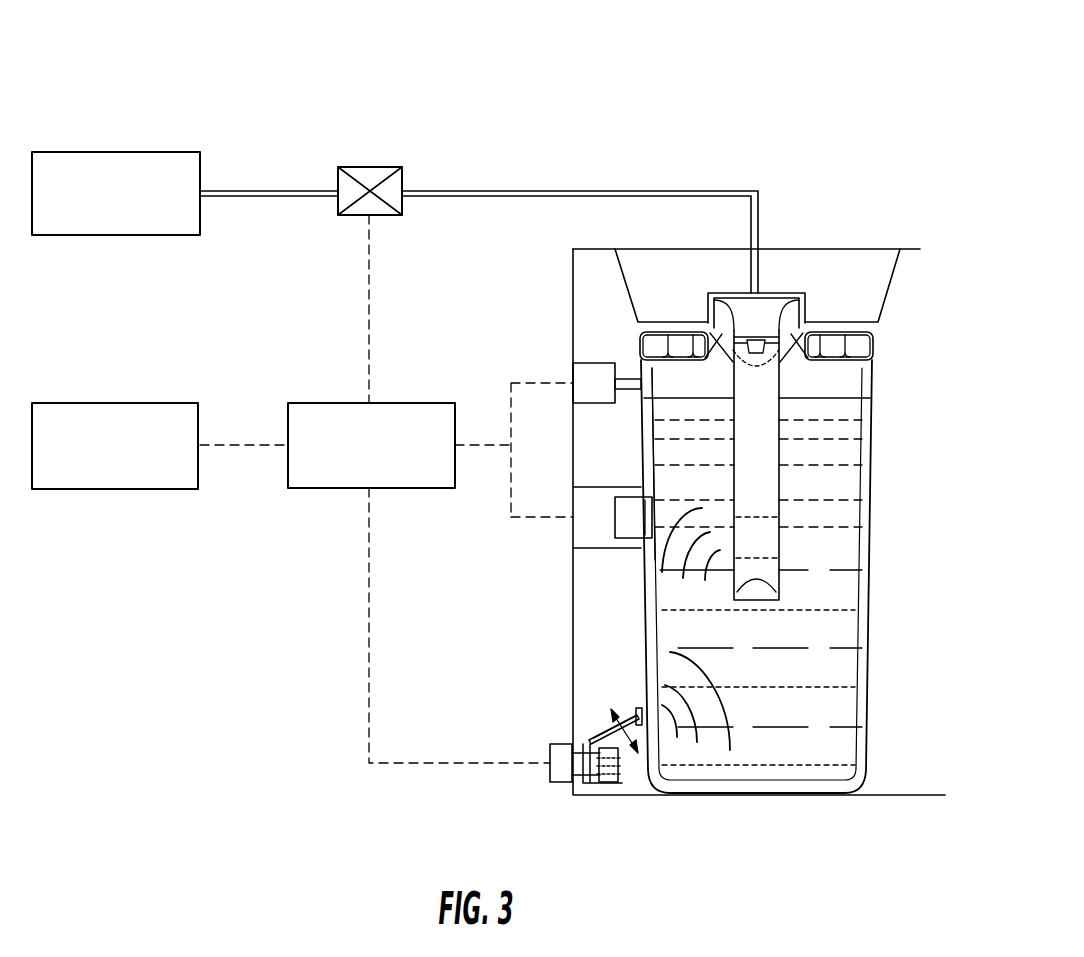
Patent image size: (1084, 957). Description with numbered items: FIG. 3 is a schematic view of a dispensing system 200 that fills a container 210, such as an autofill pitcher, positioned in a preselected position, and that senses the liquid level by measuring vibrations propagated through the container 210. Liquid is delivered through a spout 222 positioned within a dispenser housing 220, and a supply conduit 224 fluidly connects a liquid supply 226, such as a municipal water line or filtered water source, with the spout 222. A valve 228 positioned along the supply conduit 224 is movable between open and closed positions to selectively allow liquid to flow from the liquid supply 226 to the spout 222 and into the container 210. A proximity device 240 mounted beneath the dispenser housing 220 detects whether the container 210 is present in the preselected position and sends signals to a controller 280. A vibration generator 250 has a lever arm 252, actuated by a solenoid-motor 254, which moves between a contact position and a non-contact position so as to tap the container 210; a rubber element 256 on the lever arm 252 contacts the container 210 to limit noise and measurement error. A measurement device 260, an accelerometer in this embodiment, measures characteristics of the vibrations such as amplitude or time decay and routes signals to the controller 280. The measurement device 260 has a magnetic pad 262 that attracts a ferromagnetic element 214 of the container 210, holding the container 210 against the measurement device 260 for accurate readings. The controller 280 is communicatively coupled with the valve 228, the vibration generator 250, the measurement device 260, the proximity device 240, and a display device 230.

The dispensing system 200 is at (329, 48).
The container 210 is at (872, 558).
The ferromagnetic element 214 is at (648, 545).
The dispenser housing 220 is at (826, 278).
The spout 222 is at (750, 272).
The supply conduit 224 is at (573, 191).
The liquid supply 226 is at (113, 152).
The valve 228 is at (370, 167).
The display device 230 is at (110, 403).
The proximity device 240 is at (585, 363).
The vibration generator 250 is at (625, 797).
The lever arm 252 is at (597, 740).
The solenoid-motor 254 is at (560, 783).
The rubber element 256 is at (640, 708).
The measurement device 260 is at (571, 523).
The magnetic pad 262 is at (630, 538).
The controller 280 is at (322, 403).